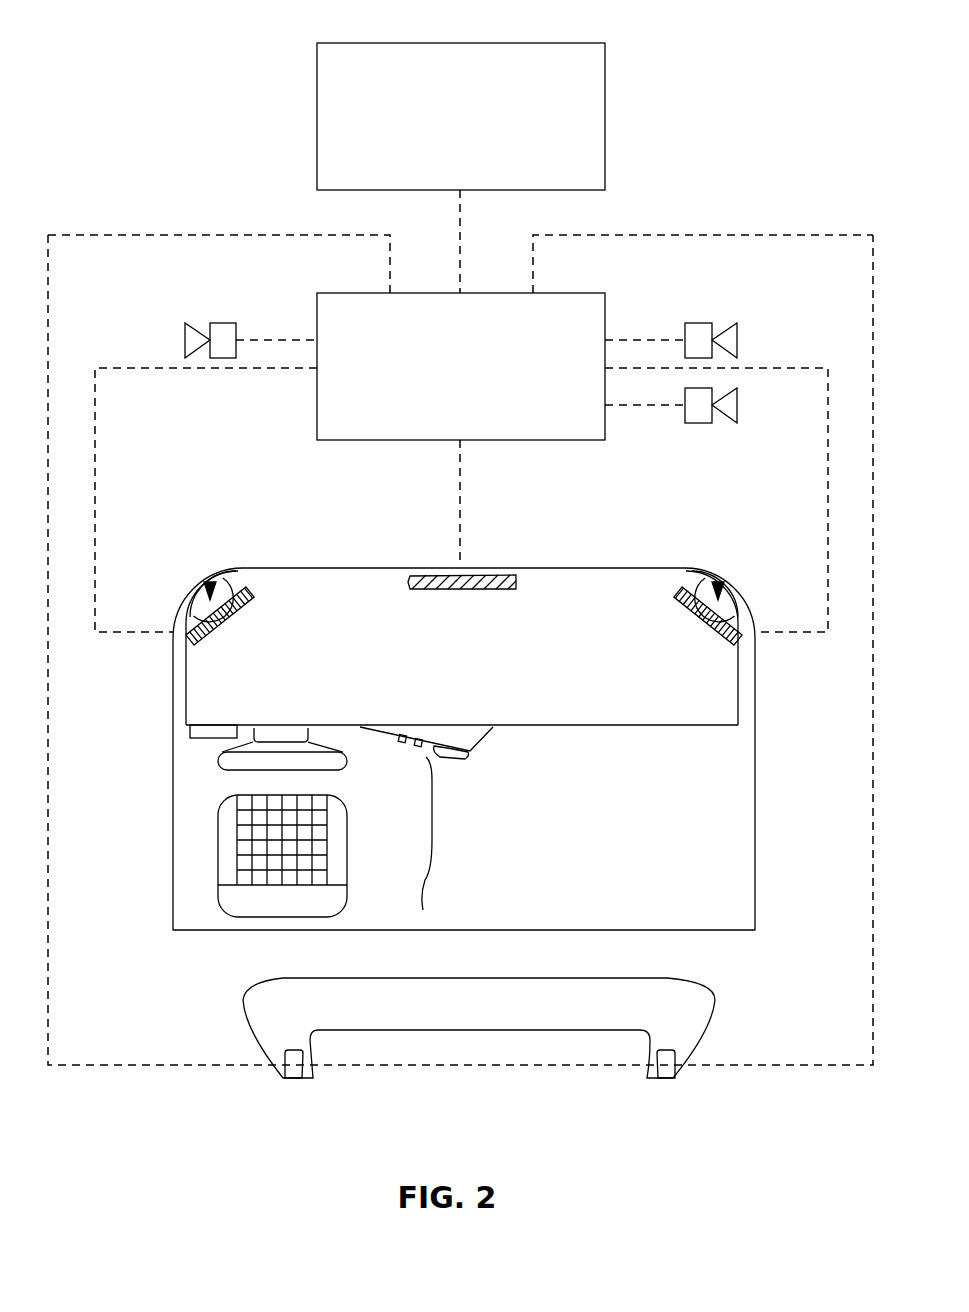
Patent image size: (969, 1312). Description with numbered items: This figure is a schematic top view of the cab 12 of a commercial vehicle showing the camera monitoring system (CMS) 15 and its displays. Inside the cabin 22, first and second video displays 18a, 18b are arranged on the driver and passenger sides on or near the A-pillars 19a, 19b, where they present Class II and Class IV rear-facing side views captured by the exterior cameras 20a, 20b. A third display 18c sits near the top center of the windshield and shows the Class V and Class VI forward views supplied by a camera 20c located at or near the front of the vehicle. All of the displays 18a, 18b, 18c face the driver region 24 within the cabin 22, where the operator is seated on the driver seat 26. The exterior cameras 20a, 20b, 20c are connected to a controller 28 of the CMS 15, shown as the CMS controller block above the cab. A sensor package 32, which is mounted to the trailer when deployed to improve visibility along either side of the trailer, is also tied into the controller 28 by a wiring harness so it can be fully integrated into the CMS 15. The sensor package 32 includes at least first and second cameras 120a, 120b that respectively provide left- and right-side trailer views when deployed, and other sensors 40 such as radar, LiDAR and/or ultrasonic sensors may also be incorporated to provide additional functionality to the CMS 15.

The vehicle cab 12 is at (464, 700).
The camera monitoring system 15 is at (742, 206).
The first video display 18a is at (209, 590).
The second video display 18b is at (719, 590).
The third display 18c is at (492, 592).
The A-pillar 19a is at (191, 596).
The A-pillar 19b is at (737, 596).
The exterior camera 20a is at (222, 323).
The exterior camera 20b is at (698, 323).
The camera 20c is at (698, 423).
The cabin 22 is at (677, 883).
The driver region 24 is at (437, 832).
The driver seat 26 is at (330, 835).
The controller 28 is at (548, 293).
The sensor package 32 is at (479, 1009).
The other sensors 40 is at (535, 43).
The first camera 120a is at (292, 1084).
The second camera 120b is at (665, 1084).